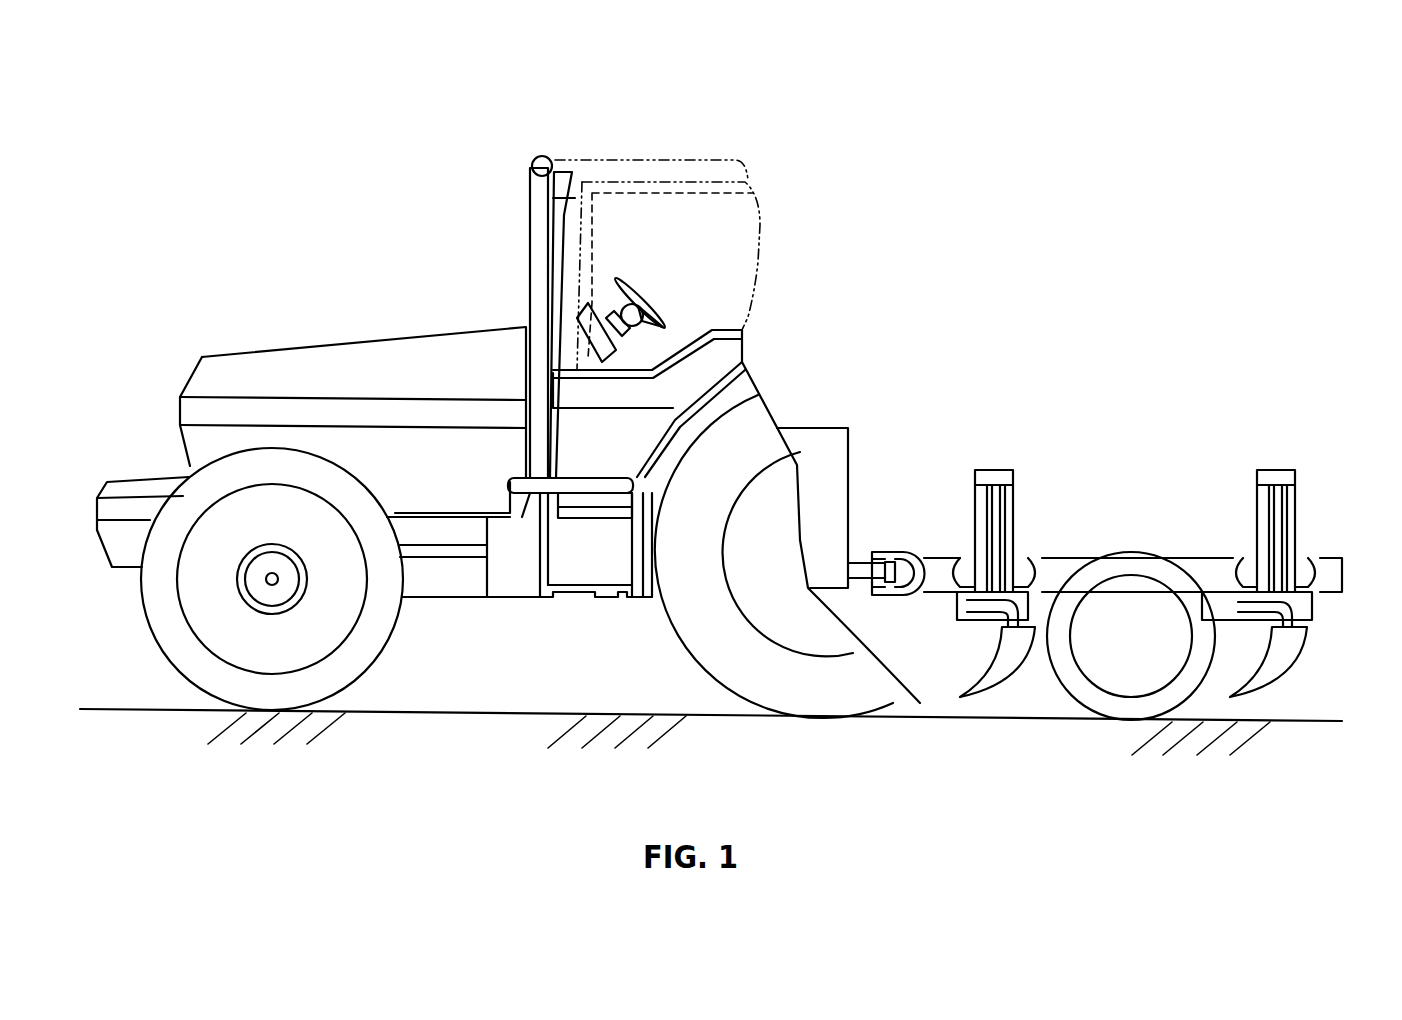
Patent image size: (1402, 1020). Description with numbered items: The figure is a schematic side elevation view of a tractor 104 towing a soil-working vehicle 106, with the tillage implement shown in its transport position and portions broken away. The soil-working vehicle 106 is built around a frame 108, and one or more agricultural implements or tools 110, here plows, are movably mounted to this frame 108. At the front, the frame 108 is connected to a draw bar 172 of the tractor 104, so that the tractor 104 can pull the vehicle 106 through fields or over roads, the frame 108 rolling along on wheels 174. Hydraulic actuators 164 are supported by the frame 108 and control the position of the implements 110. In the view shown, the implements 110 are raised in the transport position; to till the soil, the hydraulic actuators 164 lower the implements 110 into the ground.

The tractor 104 is at (283, 345).
The soil-working vehicle 106 is at (279, 104).
The frame 108 is at (1213, 568).
The agricultural implements or tools 110 is at (1002, 685).
The hydraulic actuators 164 is at (995, 465).
The draw bar 172 is at (860, 558).
The wheels 174 is at (1087, 718).